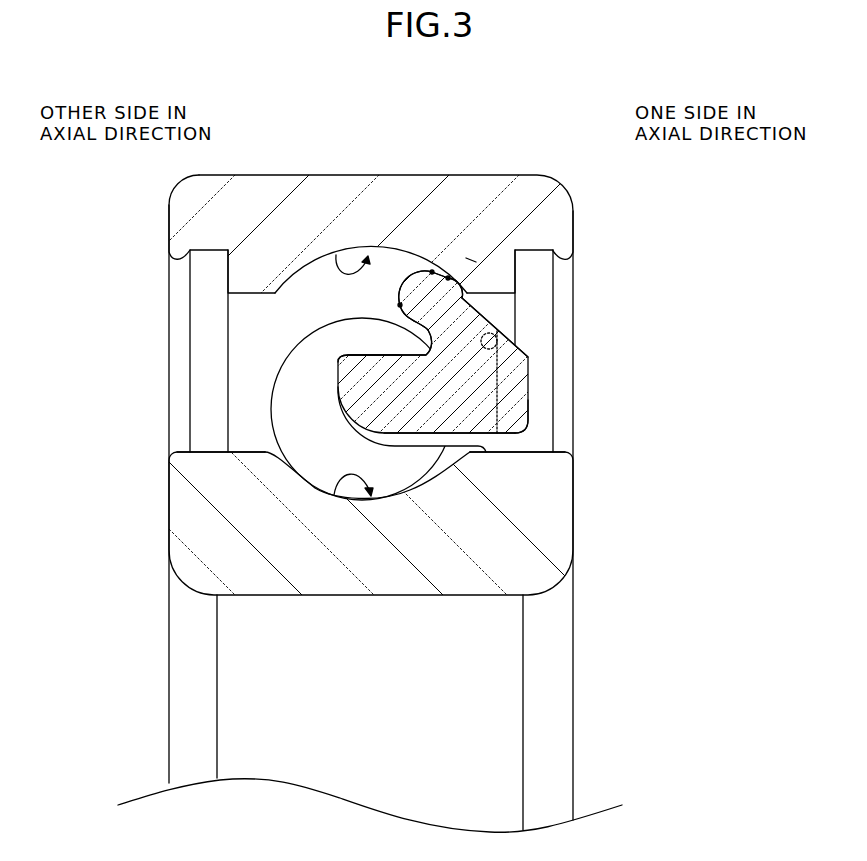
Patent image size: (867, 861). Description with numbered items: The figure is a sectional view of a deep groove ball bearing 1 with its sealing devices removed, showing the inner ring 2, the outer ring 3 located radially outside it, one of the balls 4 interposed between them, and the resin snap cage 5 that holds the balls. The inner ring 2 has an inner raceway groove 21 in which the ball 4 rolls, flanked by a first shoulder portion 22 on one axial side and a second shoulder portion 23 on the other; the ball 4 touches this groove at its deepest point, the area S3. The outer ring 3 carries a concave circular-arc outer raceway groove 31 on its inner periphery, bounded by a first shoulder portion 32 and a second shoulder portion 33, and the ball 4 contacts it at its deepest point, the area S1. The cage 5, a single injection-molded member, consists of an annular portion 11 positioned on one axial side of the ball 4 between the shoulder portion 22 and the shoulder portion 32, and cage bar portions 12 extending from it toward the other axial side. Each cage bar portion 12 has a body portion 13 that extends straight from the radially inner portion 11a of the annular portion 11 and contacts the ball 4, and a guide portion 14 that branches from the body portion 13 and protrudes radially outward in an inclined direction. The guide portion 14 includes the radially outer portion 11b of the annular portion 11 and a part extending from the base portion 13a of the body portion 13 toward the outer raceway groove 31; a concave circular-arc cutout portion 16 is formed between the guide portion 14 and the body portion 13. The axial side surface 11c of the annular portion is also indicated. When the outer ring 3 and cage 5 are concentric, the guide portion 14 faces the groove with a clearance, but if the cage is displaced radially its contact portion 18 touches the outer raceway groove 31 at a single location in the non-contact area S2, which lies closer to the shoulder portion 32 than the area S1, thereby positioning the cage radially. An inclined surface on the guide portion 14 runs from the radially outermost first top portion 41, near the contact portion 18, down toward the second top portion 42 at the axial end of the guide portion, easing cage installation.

The ball bearing 1 is at (502, 174).
The inner ring 2 is at (575, 500).
The outer ring 3 is at (576, 238).
The ball 4 is at (272, 406).
The cage 5 is at (529, 372).
The annular portion 11 is at (530, 395).
The radially inner portion of the annular portion 11a is at (514, 421).
The radially outer portion of the annular portion 11b is at (528, 355).
The axial side surface of annular body 11c is at (497, 331).
The cage bar portion 12 is at (458, 110).
The body portion 13 is at (366, 383).
The base portion 13a is at (485, 417).
The guide portion 14 is at (432, 270).
The cutout portion 16 is at (398, 343).
The contact portion 18 is at (462, 282).
The inner raceway groove 21 is at (306, 480).
The first shoulder portion 22 is at (555, 472).
The second shoulder portion 23 is at (188, 472).
The outer raceway groove 31 is at (330, 256).
The first shoulder portion 32 is at (502, 277).
The second shoulder portion 33 is at (250, 273).
The first top portion 41 is at (449, 276).
The second top portion 42 is at (400, 303).
The contact area S1 is at (336, 255).
The non-contact area S2 is at (472, 258).
The contact area S3 is at (336, 495).